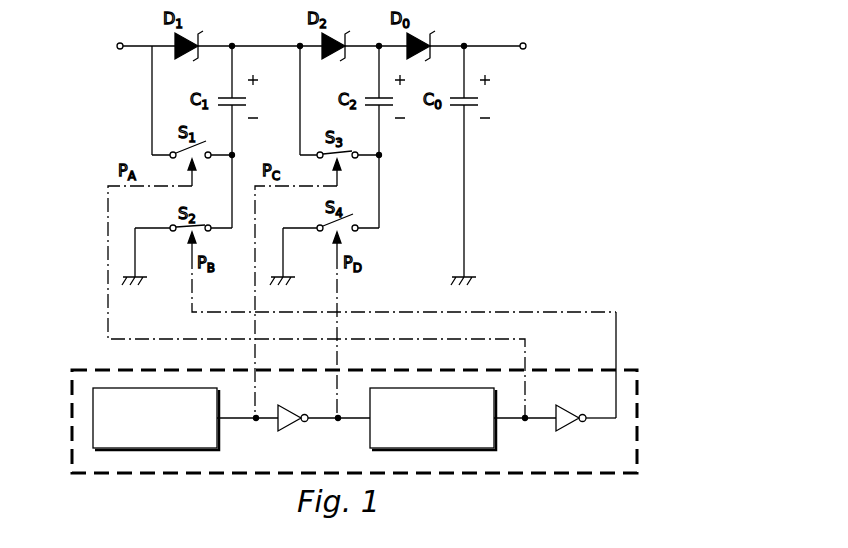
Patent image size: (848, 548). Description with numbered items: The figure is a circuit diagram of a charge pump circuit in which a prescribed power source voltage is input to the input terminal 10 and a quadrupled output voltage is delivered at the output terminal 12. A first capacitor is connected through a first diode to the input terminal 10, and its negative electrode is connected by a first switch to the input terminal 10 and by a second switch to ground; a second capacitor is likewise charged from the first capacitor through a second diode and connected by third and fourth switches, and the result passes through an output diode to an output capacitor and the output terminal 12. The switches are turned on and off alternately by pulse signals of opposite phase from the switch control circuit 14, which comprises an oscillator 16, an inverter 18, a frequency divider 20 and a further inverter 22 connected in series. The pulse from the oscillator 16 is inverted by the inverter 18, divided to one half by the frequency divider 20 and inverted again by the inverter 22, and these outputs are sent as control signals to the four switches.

The input terminal 10 is at (117, 50).
The output terminal 12 is at (526, 50).
The switch control circuit 14 is at (267, 460).
The oscillator 16 is at (93, 418).
The inverter 18 is at (292, 424).
The frequency divider 20 is at (494, 435).
The inverter 22 is at (568, 428).